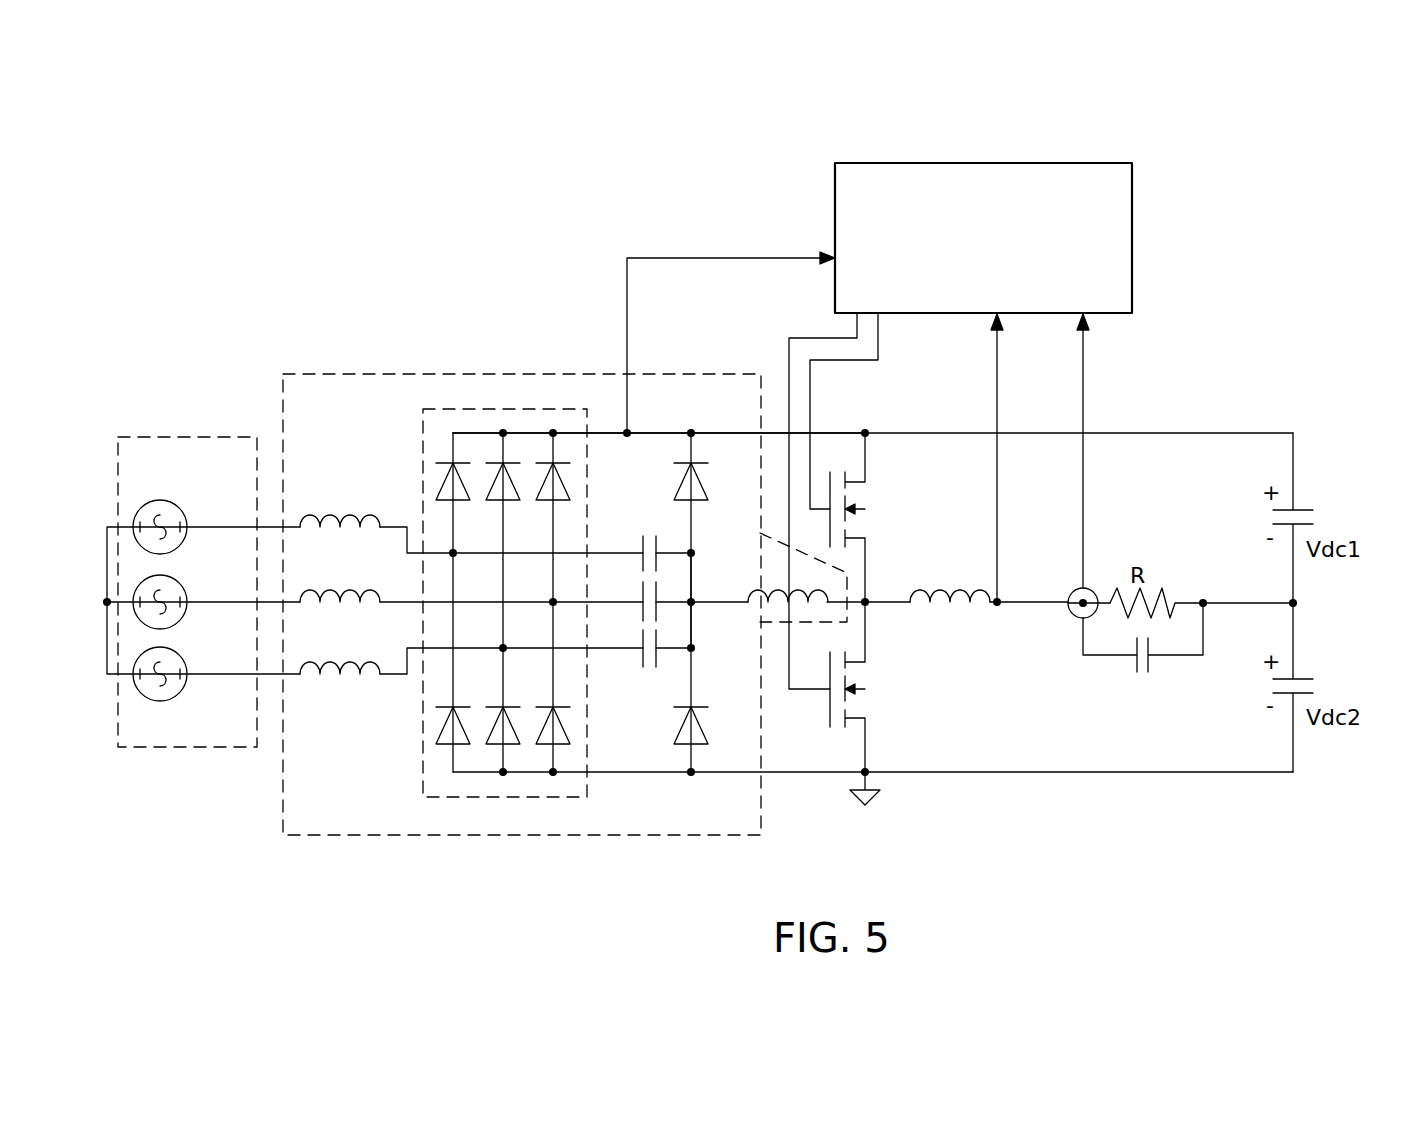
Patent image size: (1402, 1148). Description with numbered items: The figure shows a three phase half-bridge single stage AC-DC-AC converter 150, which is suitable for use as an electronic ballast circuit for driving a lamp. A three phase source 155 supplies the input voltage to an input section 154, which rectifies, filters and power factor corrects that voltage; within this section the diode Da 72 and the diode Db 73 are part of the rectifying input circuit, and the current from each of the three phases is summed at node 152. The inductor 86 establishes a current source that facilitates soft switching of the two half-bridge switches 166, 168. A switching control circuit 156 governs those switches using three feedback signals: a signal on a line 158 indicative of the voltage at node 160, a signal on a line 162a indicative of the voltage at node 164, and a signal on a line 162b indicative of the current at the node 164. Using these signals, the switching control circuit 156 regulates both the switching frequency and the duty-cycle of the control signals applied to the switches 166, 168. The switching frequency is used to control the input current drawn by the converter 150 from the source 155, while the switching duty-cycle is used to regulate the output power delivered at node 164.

The three phase half-bridge single stage AC-DC-AC converter 150 is at (1288, 192).
The input section 154 is at (333, 372).
The three phase source 155 is at (155, 435).
The switching control circuit 156 is at (1063, 163).
The line 158 is at (625, 308).
The node 160 is at (655, 432).
The diode Da 72 is at (677, 481).
The diode Db 73 is at (677, 726).
The node 152 is at (693, 606).
The inductor L1 86 is at (778, 595).
The switch 166 is at (855, 510).
The switch 168 is at (855, 690).
The line 162a is at (997, 378).
The line 162b is at (1083, 378).
The node 164 is at (1075, 612).